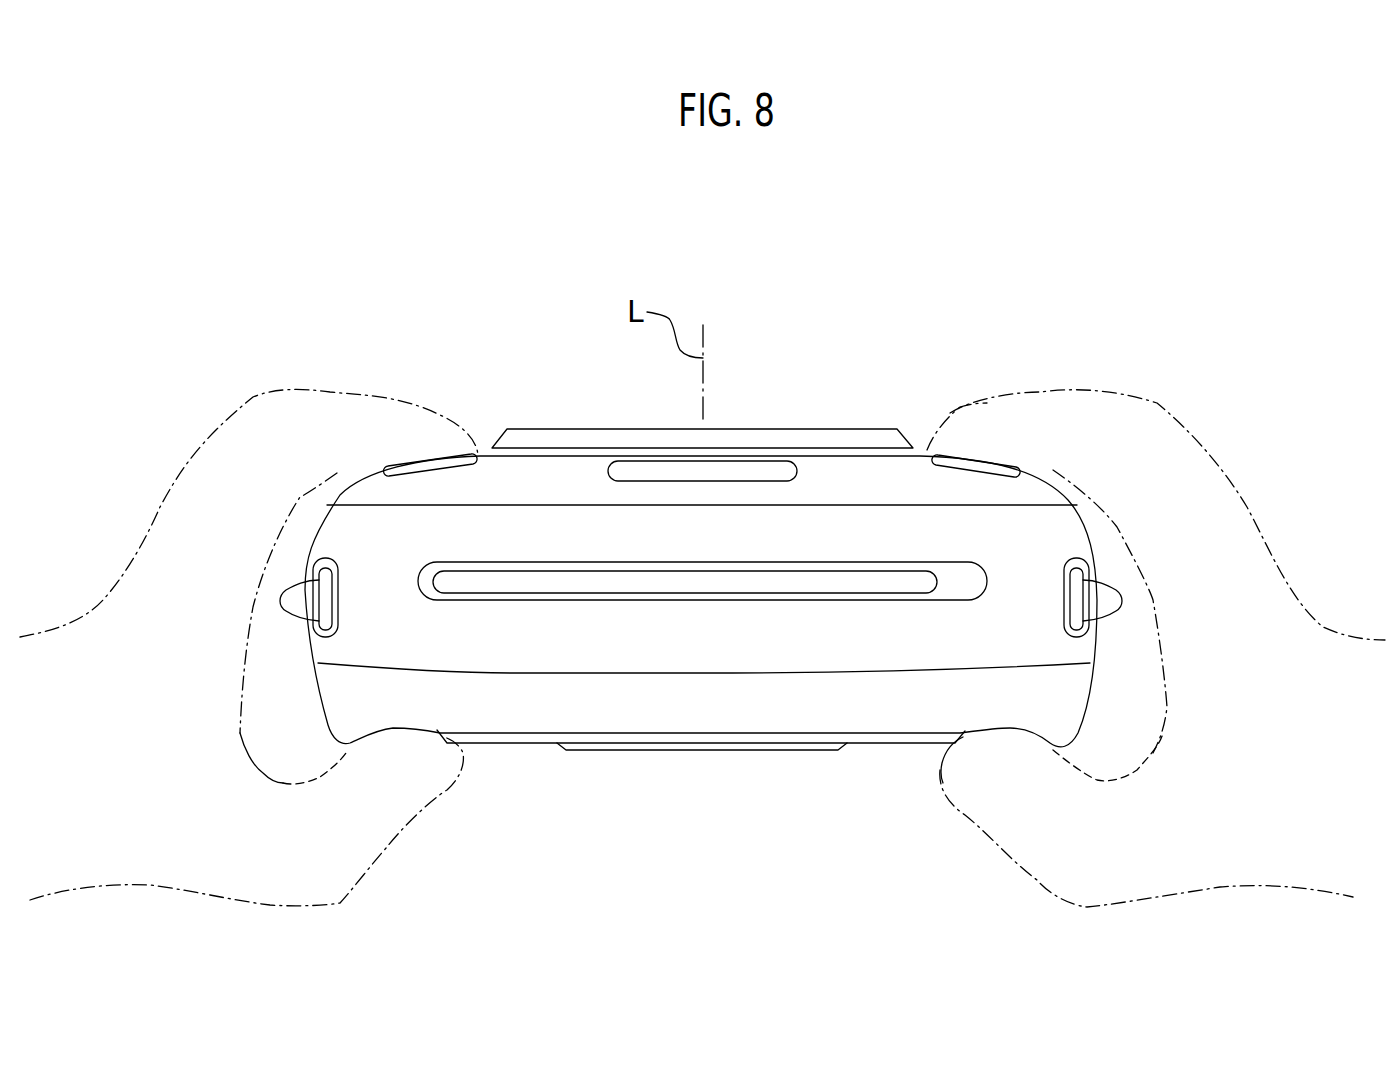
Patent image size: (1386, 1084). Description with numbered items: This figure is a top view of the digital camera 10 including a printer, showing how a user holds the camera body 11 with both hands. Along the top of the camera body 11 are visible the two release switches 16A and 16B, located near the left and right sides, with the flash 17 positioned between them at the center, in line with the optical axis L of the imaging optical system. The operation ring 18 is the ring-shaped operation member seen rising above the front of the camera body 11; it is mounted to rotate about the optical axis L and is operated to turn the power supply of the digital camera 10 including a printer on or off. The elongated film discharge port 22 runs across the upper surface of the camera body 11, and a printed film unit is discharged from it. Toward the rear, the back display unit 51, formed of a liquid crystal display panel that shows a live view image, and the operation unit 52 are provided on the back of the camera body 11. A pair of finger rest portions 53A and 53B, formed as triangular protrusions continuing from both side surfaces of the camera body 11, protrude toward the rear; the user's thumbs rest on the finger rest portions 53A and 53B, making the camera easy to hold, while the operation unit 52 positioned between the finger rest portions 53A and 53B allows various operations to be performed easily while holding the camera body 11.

The digital camera including a printer 10 is at (695, 581).
The camera body 11 is at (352, 488).
The release switch 16A is at (977, 443).
The release switch 16B is at (425, 443).
The flash 17 is at (683, 470).
The operation ring 18 is at (800, 440).
The film discharge port 22 is at (880, 573).
The back display unit 51 is at (806, 755).
The operation unit 52 is at (683, 766).
The finger rest portion 53A is at (340, 732).
The finger rest portion 53B is at (1060, 732).